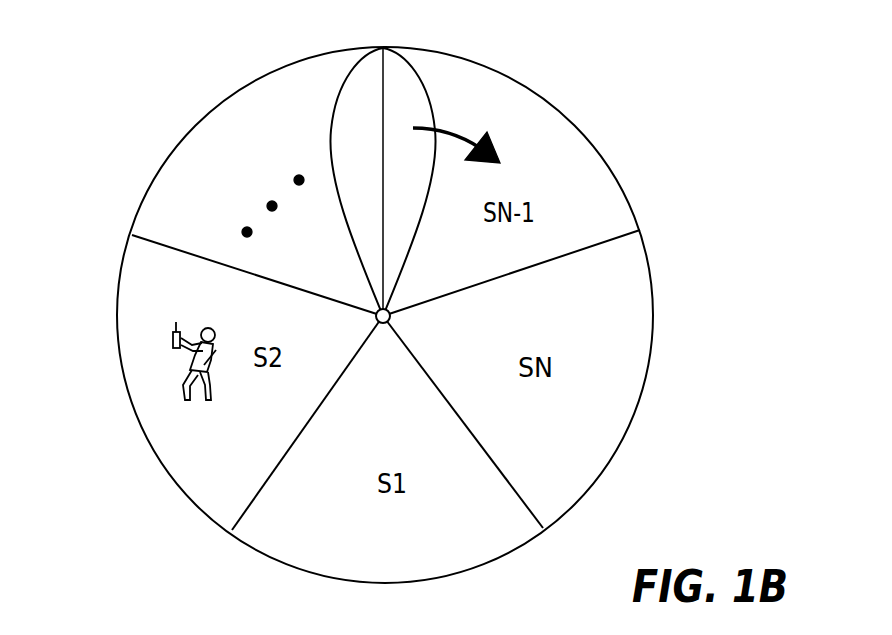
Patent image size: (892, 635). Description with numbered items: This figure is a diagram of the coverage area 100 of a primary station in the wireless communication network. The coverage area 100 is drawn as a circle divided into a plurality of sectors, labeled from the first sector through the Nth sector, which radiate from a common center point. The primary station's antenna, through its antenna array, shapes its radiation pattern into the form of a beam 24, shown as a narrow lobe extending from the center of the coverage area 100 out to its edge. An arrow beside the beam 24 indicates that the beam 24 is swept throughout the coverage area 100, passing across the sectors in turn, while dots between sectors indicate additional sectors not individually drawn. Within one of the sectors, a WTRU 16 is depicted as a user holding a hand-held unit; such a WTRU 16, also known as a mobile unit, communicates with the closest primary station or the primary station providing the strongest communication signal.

The coverage area 100 is at (123, 253).
The beam 24 is at (405, 78).
The WTRU 16 is at (213, 363).